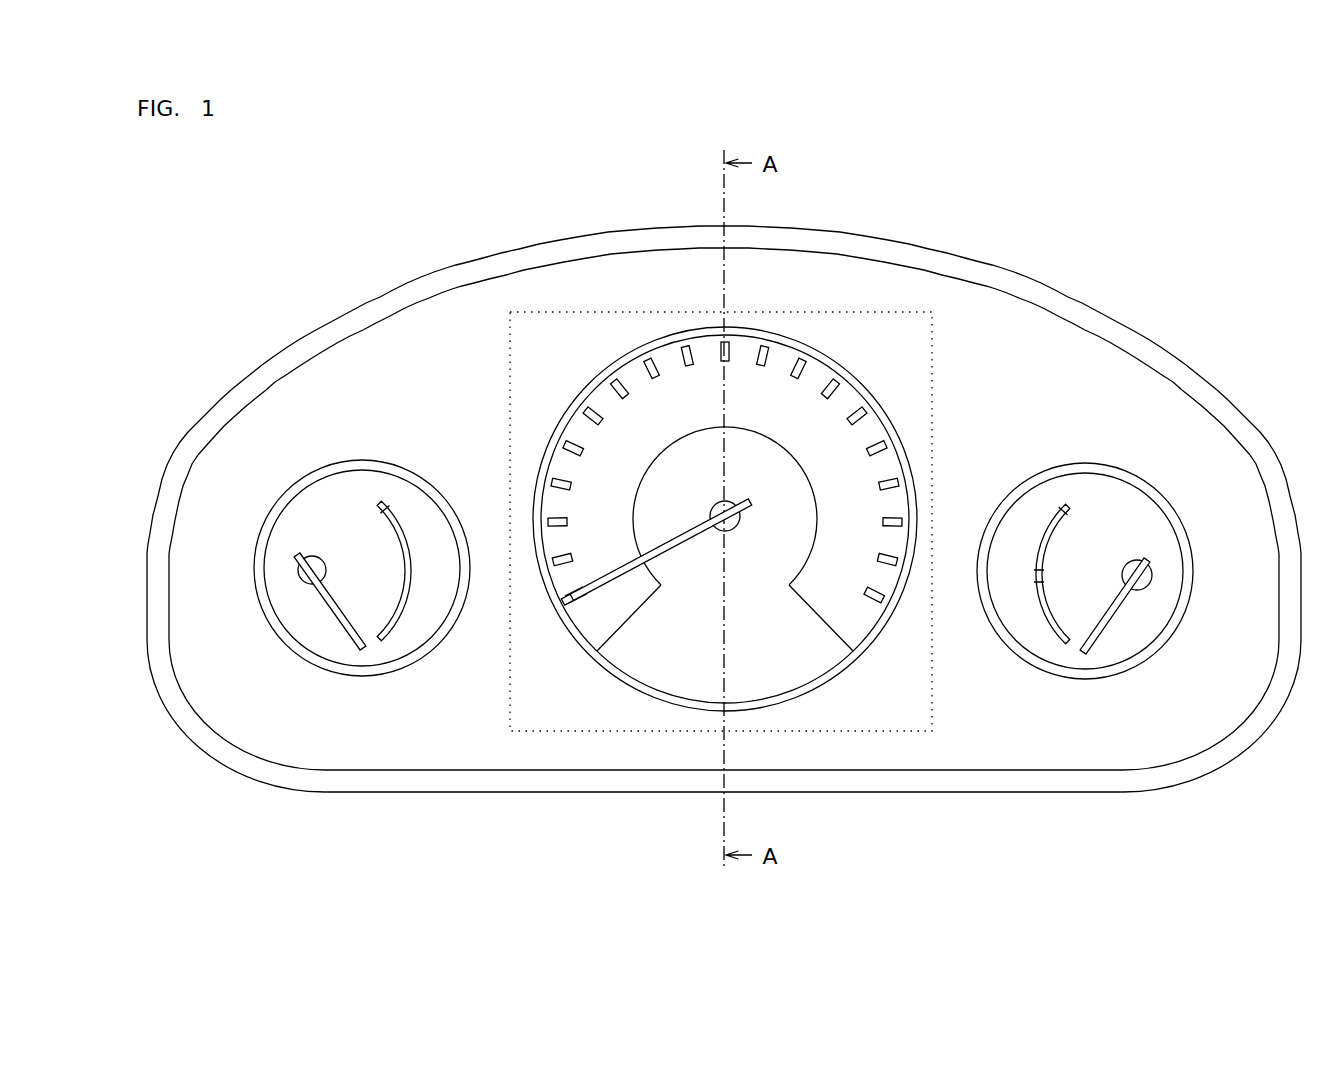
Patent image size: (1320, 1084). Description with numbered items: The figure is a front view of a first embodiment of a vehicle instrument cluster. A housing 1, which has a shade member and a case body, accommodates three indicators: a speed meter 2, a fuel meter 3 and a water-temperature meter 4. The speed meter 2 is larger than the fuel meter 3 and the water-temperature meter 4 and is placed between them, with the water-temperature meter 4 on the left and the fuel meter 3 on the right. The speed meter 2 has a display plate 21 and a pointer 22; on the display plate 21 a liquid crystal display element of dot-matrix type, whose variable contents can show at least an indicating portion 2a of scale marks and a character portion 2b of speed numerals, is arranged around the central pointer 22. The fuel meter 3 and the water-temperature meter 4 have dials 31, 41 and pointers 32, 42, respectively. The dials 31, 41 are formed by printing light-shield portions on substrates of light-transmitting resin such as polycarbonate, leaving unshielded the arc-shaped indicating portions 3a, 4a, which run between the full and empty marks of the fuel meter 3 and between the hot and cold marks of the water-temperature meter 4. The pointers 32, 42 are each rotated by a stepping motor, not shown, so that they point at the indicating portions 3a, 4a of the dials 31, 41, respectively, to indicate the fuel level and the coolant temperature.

The housing 1 is at (1038, 249).
The display plate 21 is at (648, 307).
The speed meter 2 is at (723, 595).
The indicating portion 2a is at (568, 438).
The character portion 2b is at (848, 458).
The pointer 22 is at (747, 534).
The water-temperature meter 4 is at (362, 656).
The dial 41 is at (412, 642).
The pointer 42 is at (339, 564).
The indicating portion 4a is at (405, 537).
The fuel meter 3 is at (1075, 659).
The dial 31 is at (1028, 640).
The pointer 32 is at (1099, 565).
The indicating portion 3a is at (1037, 598).